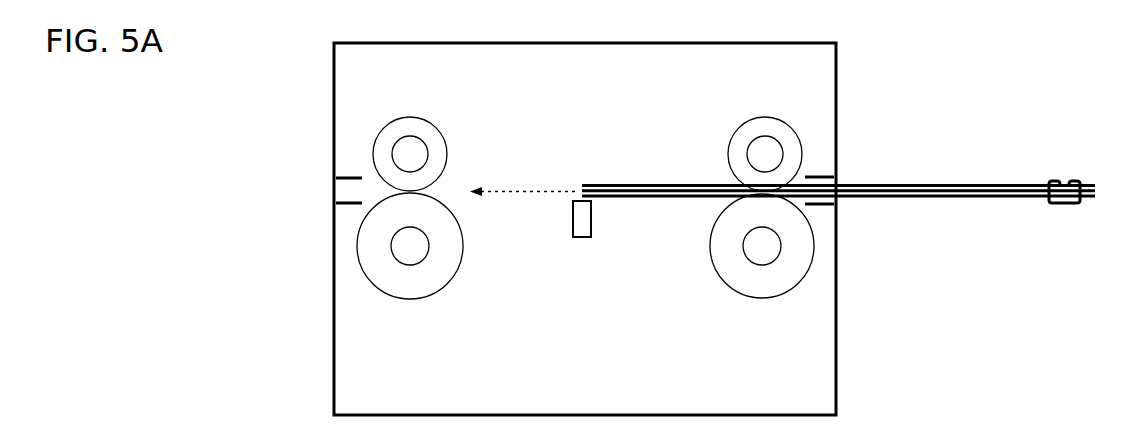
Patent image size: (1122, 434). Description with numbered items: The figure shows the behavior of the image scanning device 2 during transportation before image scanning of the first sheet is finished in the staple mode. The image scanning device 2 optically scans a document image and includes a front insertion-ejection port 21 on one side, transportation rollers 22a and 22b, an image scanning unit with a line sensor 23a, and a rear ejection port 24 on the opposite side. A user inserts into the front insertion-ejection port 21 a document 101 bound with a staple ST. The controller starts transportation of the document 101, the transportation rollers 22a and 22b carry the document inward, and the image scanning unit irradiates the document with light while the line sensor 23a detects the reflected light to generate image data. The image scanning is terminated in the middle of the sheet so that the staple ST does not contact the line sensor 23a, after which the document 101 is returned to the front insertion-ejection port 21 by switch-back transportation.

The image scanning device 2 is at (840, 78).
The front insertion-ejection port 21 is at (852, 175).
The transportation roller 22a is at (730, 156).
The transportation roller 22b is at (446, 156).
The line sensor 23a is at (580, 238).
The rear ejection port 24 is at (327, 171).
The document 101 is at (972, 182).
The staple ST is at (1068, 206).